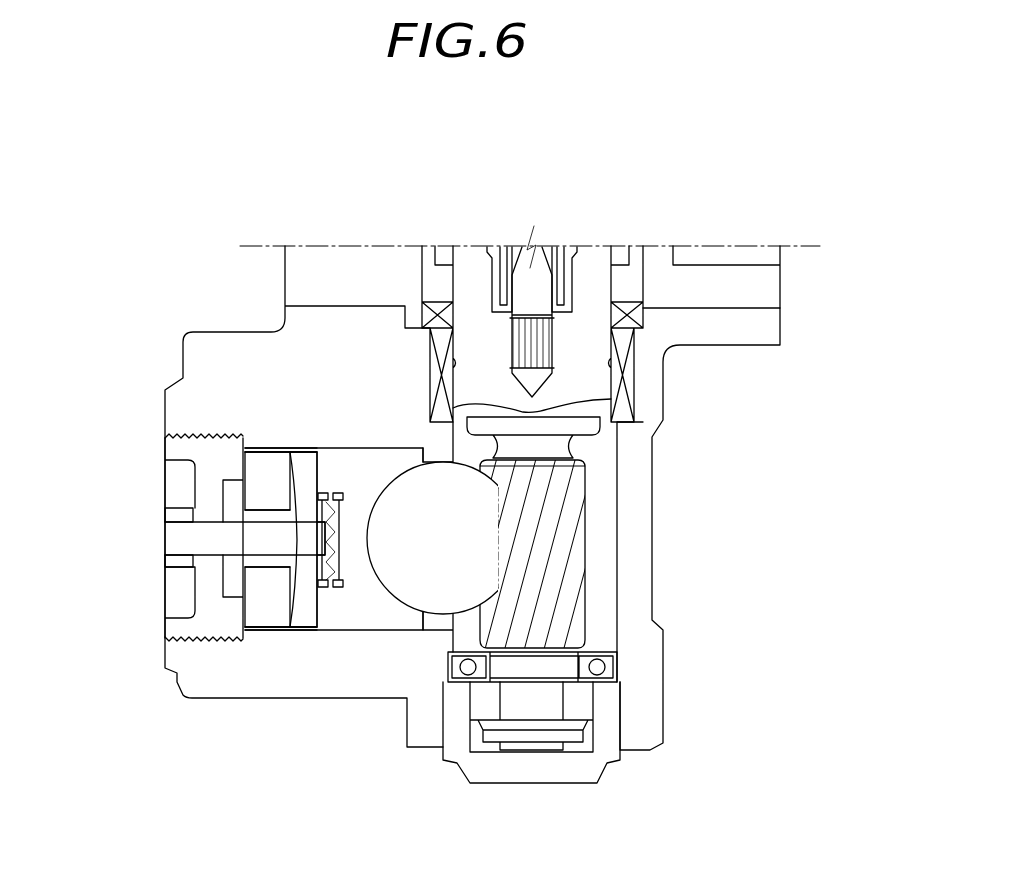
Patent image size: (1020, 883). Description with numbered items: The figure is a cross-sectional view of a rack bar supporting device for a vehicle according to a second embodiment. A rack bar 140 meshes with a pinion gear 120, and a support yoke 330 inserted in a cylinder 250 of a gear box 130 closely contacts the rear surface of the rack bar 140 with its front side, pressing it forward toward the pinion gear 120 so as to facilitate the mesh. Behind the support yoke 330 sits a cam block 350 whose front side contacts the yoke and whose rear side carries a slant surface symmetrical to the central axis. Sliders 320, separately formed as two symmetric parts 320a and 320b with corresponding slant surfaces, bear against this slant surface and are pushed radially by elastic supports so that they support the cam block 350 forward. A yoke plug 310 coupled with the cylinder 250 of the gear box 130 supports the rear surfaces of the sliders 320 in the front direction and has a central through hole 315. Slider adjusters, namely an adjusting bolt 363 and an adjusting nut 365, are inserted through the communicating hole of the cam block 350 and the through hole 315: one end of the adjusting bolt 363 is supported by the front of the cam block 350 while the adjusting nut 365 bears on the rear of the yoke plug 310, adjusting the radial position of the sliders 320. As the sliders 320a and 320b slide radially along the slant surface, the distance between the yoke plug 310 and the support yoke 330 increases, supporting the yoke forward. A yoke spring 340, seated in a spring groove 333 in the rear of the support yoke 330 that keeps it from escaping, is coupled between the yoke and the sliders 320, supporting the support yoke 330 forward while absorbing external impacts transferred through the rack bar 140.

The pinion gear 120 is at (567, 573).
The gear box 130 is at (221, 347).
The rack bar 140 is at (453, 567).
The cylinder 250 is at (263, 632).
The yoke plug 310 is at (180, 450).
The through hole 315 is at (193, 508).
The sliders 320 is at (95, 588).
The slider 320a is at (257, 496).
The slider 320b is at (247, 588).
The support yoke 330 is at (388, 622).
The spring groove 333 is at (332, 600).
The yoke spring 340 is at (292, 603).
The cam block 350 is at (303, 452).
The adjusting bolt 363 is at (175, 539).
The adjusting nut 365 is at (180, 566).